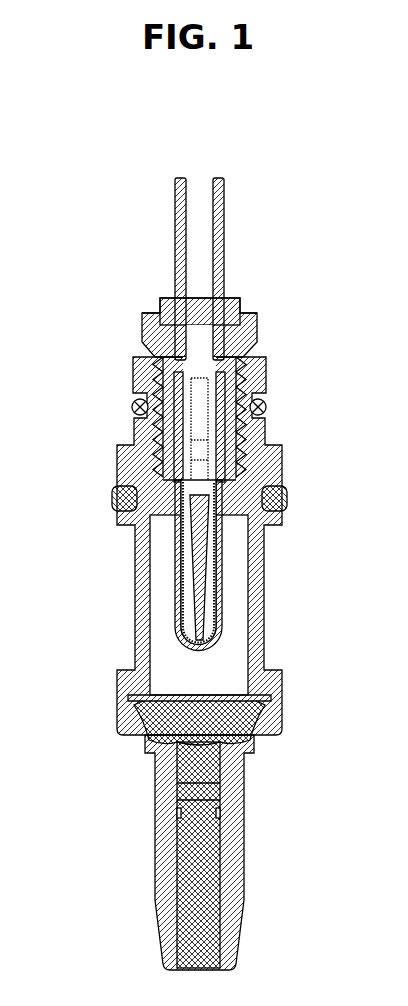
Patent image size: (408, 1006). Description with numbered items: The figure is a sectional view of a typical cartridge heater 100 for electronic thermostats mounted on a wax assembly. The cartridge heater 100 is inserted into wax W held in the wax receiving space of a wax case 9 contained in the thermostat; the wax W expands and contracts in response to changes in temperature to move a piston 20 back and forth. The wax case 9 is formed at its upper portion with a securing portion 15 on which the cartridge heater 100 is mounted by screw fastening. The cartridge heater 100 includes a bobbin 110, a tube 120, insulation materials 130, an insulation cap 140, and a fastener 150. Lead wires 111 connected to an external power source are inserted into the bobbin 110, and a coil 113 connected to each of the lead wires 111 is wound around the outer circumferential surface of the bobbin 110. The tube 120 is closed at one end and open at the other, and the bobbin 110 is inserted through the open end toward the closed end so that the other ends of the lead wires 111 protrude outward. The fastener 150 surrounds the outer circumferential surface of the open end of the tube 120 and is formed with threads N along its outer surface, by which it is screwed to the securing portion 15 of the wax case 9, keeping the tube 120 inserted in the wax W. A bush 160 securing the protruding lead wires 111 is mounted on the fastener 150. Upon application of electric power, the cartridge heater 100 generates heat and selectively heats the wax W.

The cartridge heater 100 is at (157, 203).
The lead wires 111 is at (219, 178).
The bush 160 is at (158, 299).
The fastener 150 is at (160, 352).
The insulation cap 140 is at (176, 388).
The securing portion 15 is at (150, 432).
The insulation materials 130 is at (200, 445).
The threads N is at (265, 420).
The coil 113 is at (208, 582).
The bobbin 110 is at (205, 580).
The tube 120 is at (218, 618).
The wax case 9 is at (147, 617).
The wax W is at (220, 673).
The piston 20 is at (202, 898).